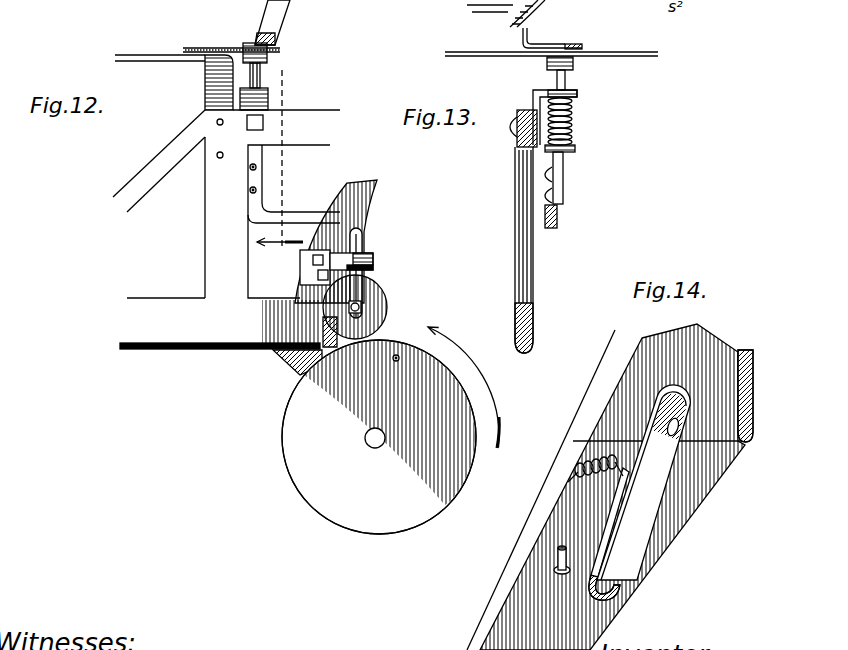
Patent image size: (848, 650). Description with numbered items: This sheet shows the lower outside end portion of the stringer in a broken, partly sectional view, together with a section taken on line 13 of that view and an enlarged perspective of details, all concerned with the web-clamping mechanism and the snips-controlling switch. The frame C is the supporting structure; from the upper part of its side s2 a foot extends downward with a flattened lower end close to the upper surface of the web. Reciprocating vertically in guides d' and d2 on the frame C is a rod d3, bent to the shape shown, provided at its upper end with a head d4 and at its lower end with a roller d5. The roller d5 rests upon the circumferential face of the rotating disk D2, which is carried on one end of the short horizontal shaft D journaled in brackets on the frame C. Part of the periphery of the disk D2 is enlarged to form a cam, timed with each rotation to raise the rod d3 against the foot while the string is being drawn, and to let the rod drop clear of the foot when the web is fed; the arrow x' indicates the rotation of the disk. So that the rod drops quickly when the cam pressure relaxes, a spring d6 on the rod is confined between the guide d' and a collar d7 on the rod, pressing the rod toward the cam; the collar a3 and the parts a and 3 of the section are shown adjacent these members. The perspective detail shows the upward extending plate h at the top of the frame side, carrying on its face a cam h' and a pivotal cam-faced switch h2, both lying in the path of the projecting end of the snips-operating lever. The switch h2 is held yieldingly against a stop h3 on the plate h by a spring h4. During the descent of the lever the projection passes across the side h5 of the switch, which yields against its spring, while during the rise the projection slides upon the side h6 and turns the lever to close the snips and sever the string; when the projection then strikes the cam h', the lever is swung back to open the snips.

In FIG. 12, the bar 3 is at (197, 47).
In FIG. 13, the bar 3 is at (481, 52).
In FIG. 14, the bar 3 is at (683, 457).
In FIG. 12, the rod a is at (262, 13).
In FIG. 13, the rod a is at (546, 24).
In FIG. 12, the head d4 is at (268, 58).
In FIG. 12, the guide d' is at (281, 93).
In FIG. 13, the guide d' is at (543, 112).
In FIG. 12, the side of the frame s2 is at (205, 209).
In FIG. 12, the frame C is at (205, 274).
In FIG. 13, the frame C is at (507, 231).
In FIG. 12, the rod d3 is at (293, 218).
In FIG. 12, the direction arrow 13 is at (280, 256).
In FIG. 12, the guide d2 is at (372, 264).
In FIG. 12, the roller d5 is at (375, 302).
In FIG. 12, the direction of rotation x' is at (446, 380).
In FIG. 12, the disk D2 is at (290, 436).
In FIG. 12, the shaft D is at (368, 444).
In FIG. 13, the collar a3 is at (567, 83).
In FIG. 13, the spring d6 is at (575, 126).
In FIG. 13, the collar d7 is at (577, 150).
In FIG. 14, the plate h is at (541, 490).
In FIG. 14, the cam h' is at (755, 403).
In FIG. 14, the switch h2 is at (643, 482).
In FIG. 14, the stop h3 is at (555, 568).
In FIG. 14, the spring h4 is at (573, 453).
In FIG. 14, the side of the switch h5 is at (607, 533).
In FIG. 14, the side of the switch h6 is at (650, 537).